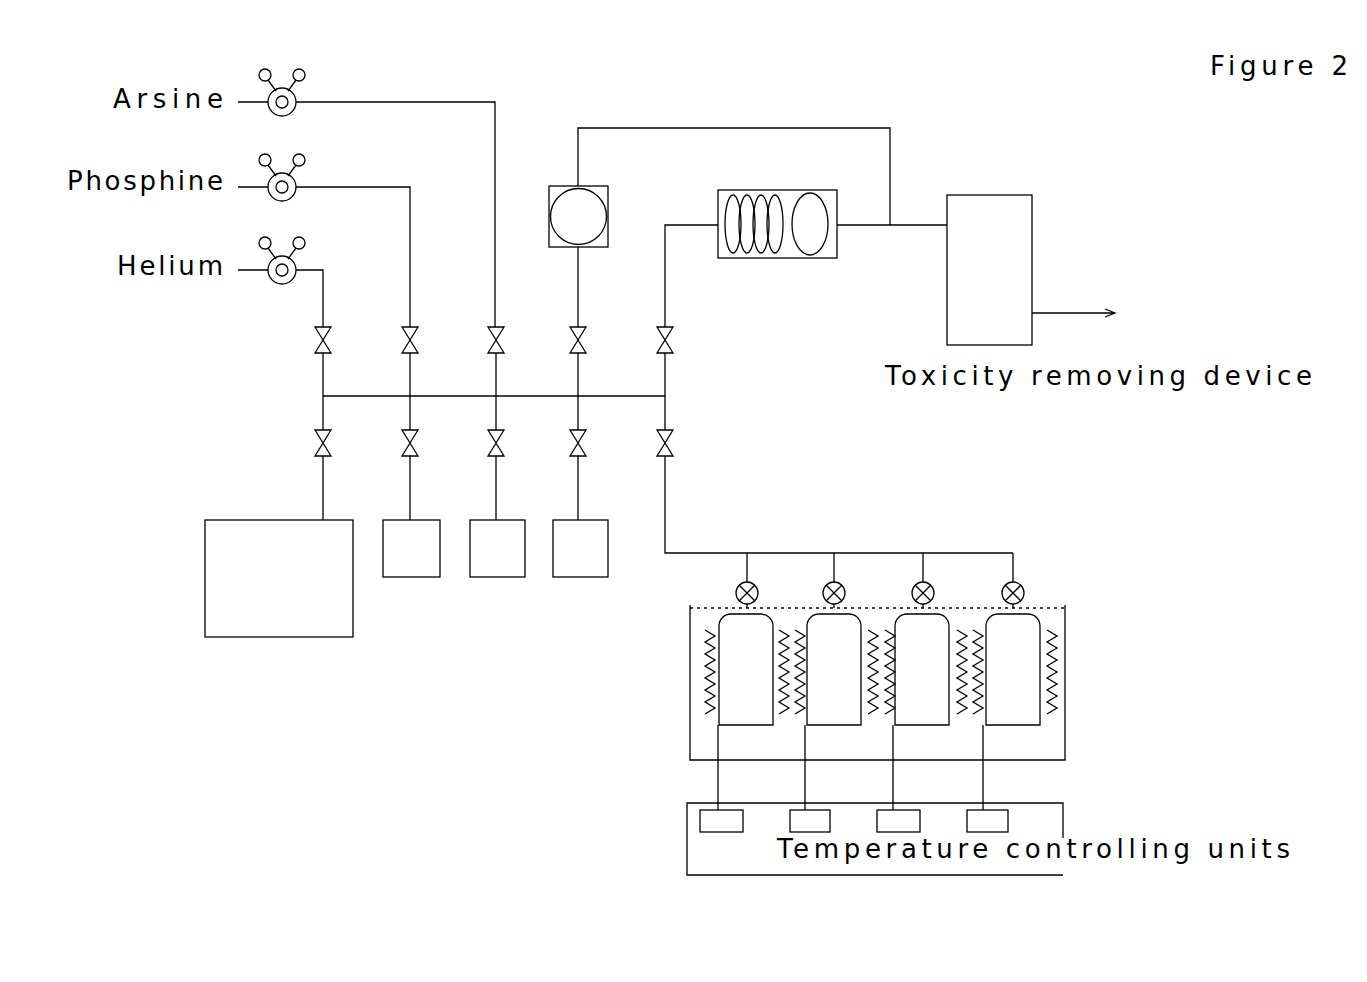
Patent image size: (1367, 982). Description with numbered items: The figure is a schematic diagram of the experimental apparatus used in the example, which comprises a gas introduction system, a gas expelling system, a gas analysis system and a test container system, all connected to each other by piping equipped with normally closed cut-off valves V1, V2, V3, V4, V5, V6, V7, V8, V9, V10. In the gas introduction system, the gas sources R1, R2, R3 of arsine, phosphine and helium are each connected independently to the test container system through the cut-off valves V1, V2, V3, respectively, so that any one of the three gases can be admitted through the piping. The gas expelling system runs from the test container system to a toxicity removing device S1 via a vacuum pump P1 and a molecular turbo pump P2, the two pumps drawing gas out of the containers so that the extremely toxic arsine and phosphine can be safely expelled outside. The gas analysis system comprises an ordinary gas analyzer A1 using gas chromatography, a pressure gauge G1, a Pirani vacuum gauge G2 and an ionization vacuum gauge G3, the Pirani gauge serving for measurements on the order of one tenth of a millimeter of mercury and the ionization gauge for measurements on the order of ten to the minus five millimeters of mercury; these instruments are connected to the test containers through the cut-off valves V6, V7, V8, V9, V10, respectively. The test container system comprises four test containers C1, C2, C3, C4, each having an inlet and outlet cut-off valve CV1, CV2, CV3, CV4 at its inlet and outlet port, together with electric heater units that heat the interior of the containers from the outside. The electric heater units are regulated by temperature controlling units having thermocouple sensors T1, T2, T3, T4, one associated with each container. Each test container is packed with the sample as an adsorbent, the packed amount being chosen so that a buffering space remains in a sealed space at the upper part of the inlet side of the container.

The gas source R1 is at (366, 193).
The gas source R2 is at (324, 236).
The gas source R3 is at (292, 278).
The cut-off valve V1 is at (347, 342).
The cut-off valve V2 is at (434, 342).
The cut-off valve V3 is at (520, 342).
The cut-off valve V4 is at (602, 342).
The cut-off valve V5 is at (689, 342).
The cut-off valve V6 is at (347, 445).
The cut-off valve V7 is at (434, 445).
The cut-off valve V8 is at (520, 445).
The cut-off valve V9 is at (602, 445).
The cut-off valve V10 is at (698, 445).
The vacuum pump P1 is at (606, 188).
The molecular turbo pump P2 is at (788, 189).
The toxicity removing device S1 is at (993, 195).
The gas analyzer A1 is at (279, 578).
The pressure gauge G1 is at (411, 548).
The Pirani vacuum gauge G2 is at (497, 548).
The ionization vacuum gauge G3 is at (580, 548).
The inlet and outlet cut-off valve CV1 is at (776, 580).
The inlet and outlet cut-off valve CV2 is at (862, 580).
The inlet and outlet cut-off valve CV3 is at (951, 580).
The inlet and outlet cut-off valve CV4 is at (1043, 580).
The test container C1 is at (747, 669).
The test container C2 is at (836, 669).
The test container C3 is at (926, 669).
The test container C4 is at (1015, 669).
The thermocouple sensor T1 is at (727, 778).
The thermocouple sensor T2 is at (816, 778).
The thermocouple sensor T3 is at (903, 778).
The thermocouple sensor T4 is at (993, 778).